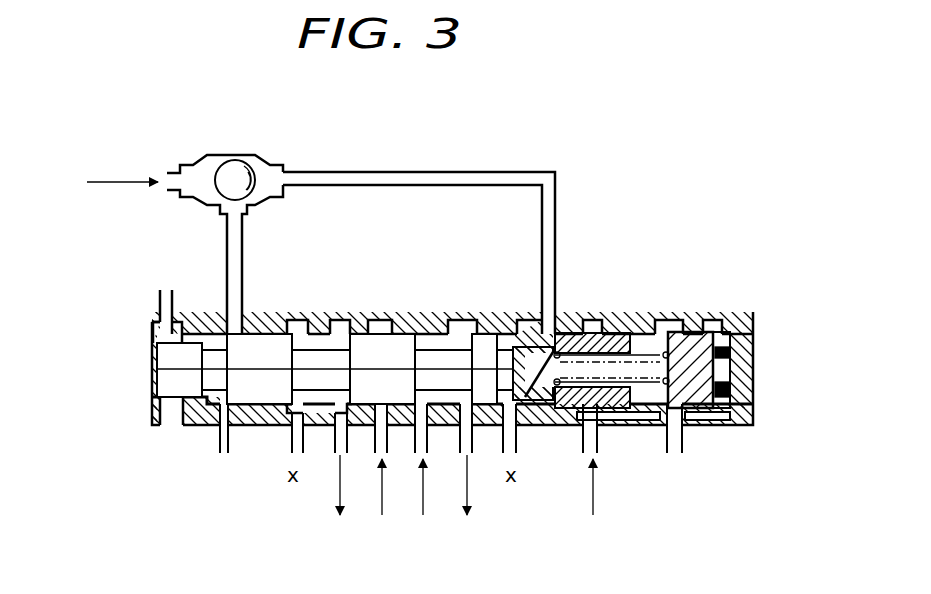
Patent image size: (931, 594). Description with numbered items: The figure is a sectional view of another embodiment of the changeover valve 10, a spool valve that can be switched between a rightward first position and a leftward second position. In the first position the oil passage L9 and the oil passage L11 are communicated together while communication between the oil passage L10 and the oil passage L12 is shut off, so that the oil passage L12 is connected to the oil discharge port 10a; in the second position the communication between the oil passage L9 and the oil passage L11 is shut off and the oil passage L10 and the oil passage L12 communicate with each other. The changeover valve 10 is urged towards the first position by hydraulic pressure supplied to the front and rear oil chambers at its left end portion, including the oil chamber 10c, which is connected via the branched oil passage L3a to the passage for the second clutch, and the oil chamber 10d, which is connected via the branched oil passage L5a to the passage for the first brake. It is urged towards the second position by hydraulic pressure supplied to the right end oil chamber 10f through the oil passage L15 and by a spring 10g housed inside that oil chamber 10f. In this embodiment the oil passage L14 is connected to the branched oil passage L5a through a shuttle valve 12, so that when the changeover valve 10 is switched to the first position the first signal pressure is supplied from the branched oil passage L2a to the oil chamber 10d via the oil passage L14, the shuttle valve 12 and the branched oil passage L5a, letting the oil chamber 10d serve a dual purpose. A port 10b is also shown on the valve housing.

The changeover valve 10 is at (263, 388).
The oil discharge port 10a is at (556, 454).
The port 10b is at (292, 432).
The oil chamber 10c is at (160, 410).
The oil chamber 10d is at (218, 423).
The oil chamber 10f is at (600, 368).
The spring 10g is at (653, 350).
The shuttle valve 12 is at (242, 167).
The oil passage L14 is at (393, 178).
The branched oil passage L5a is at (90, 184).
The branched oil passage L3a is at (167, 286).
The oil passage L11 is at (333, 473).
The oil passage L9 is at (382, 490).
The oil passage L10 is at (423, 490).
The oil passage L12 is at (470, 487).
The branched oil passage L2a is at (597, 490).
The oil passage L15 is at (678, 460).